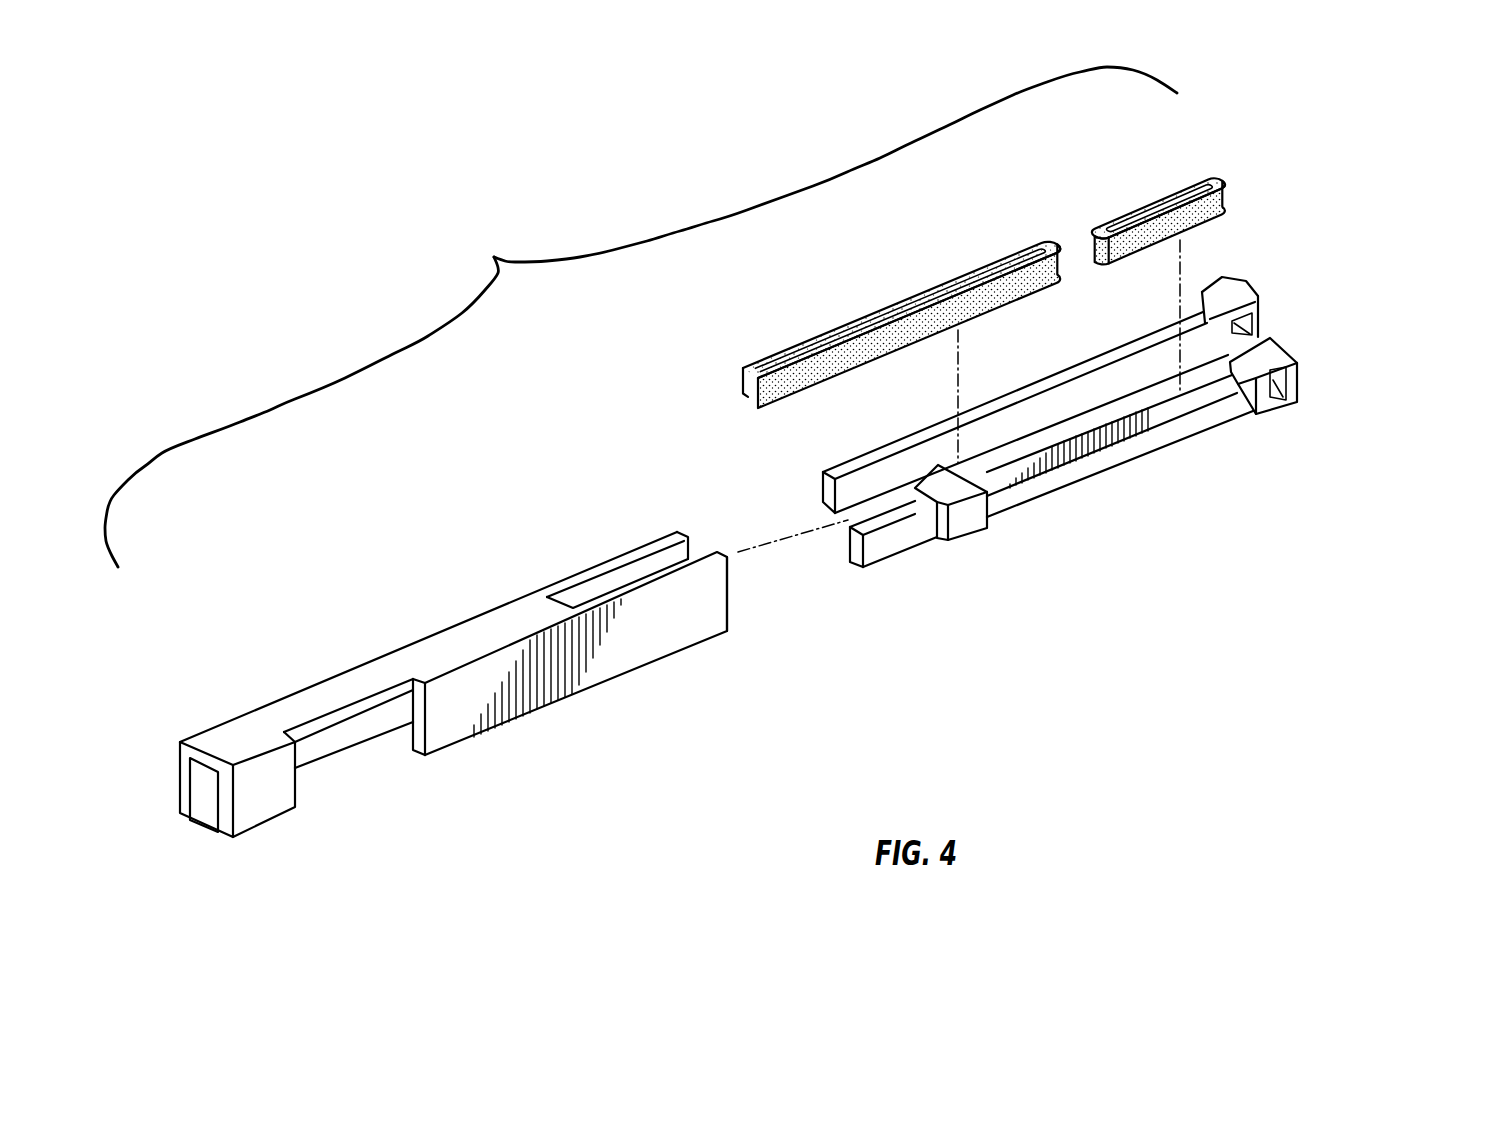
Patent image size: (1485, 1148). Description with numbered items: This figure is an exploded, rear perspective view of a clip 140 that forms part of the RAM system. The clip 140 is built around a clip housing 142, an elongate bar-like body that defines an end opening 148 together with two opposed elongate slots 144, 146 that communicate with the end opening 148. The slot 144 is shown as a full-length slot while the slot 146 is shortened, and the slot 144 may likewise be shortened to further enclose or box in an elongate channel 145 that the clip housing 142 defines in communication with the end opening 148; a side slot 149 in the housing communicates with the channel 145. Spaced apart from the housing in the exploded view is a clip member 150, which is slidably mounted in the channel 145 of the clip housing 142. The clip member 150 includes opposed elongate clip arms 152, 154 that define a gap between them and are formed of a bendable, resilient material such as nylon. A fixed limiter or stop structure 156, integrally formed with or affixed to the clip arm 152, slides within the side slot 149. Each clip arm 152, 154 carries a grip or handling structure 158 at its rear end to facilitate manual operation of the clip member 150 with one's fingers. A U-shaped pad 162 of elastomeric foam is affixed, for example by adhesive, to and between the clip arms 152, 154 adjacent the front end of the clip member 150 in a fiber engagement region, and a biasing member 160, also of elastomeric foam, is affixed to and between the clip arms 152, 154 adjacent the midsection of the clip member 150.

The clip 140 is at (667, 193).
The clip housing 142 is at (440, 632).
The elongate slot 144 is at (645, 648).
The elongate channel 145 is at (302, 775).
The elongate slot 146 is at (633, 572).
The end opening 148 is at (733, 592).
The side slot 149 is at (410, 728).
The clip member 150 is at (1200, 432).
The clip arm 152 is at (1203, 403).
The clip arm 154 is at (1107, 357).
The stop structure 156 is at (968, 532).
The handling structure 158 is at (1228, 288).
The biasing member 160 is at (943, 280).
The pad 162 is at (1152, 188).